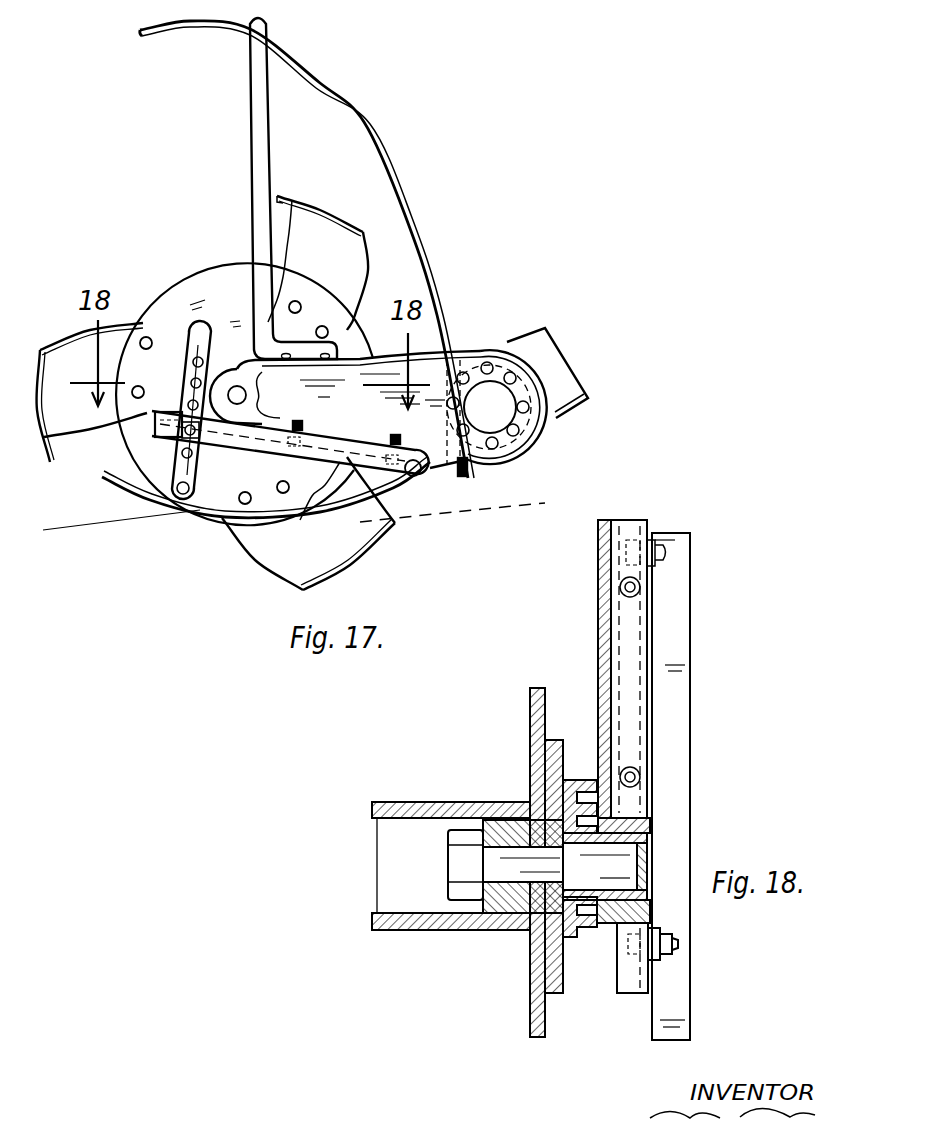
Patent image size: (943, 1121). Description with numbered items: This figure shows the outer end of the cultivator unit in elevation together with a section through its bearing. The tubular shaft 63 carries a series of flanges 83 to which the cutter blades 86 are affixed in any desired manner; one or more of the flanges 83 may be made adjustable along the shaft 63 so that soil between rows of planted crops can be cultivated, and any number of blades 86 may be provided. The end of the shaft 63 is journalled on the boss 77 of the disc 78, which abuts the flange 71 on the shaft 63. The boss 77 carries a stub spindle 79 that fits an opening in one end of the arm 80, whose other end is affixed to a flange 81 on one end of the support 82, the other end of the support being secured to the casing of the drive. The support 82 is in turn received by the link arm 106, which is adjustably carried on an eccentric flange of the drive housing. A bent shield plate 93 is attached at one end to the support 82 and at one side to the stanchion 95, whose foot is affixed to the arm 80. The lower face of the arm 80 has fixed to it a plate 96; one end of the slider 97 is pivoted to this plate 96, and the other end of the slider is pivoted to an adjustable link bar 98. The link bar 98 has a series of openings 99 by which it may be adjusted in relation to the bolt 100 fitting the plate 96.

In FIG. 17, the bent shield plate 93 is at (385, 152).
In FIG. 17, the stanchion 95 is at (262, 116).
In FIG. 17, the flanges 83 is at (210, 292).
In FIG. 17, the cutter blades 86 is at (88, 348).
In FIG. 17, the openings 99 is at (192, 350).
In FIG. 17, the link arm 106 is at (528, 335).
In FIG. 17, the support 82 is at (513, 392).
In FIG. 17, the flange 81 is at (512, 441).
In FIG. 17, the arm 80 is at (493, 510).
In FIG. 18, the arm 80 is at (603, 645).
In FIG. 17, the plate 96 is at (347, 458).
In FIG. 18, the plate 96 is at (627, 970).
In FIG. 17, the slider 97 is at (195, 512).
In FIG. 18, the slider 97 is at (672, 772).
In FIG. 17, the adjustable link bar 98 is at (185, 493).
In FIG. 18, the adjustable link bar 98 is at (658, 963).
In FIG. 17, the bolt 100 is at (173, 437).
In FIG. 18, the bolt 100 is at (678, 943).
In FIG. 18, the disc 78 is at (553, 762).
In FIG. 18, the flange 71 is at (525, 775).
In FIG. 18, the tubular shaft 63 is at (410, 800).
In FIG. 18, the stub spindle 79 is at (525, 855).
In FIG. 18, the boss 77 is at (510, 905).